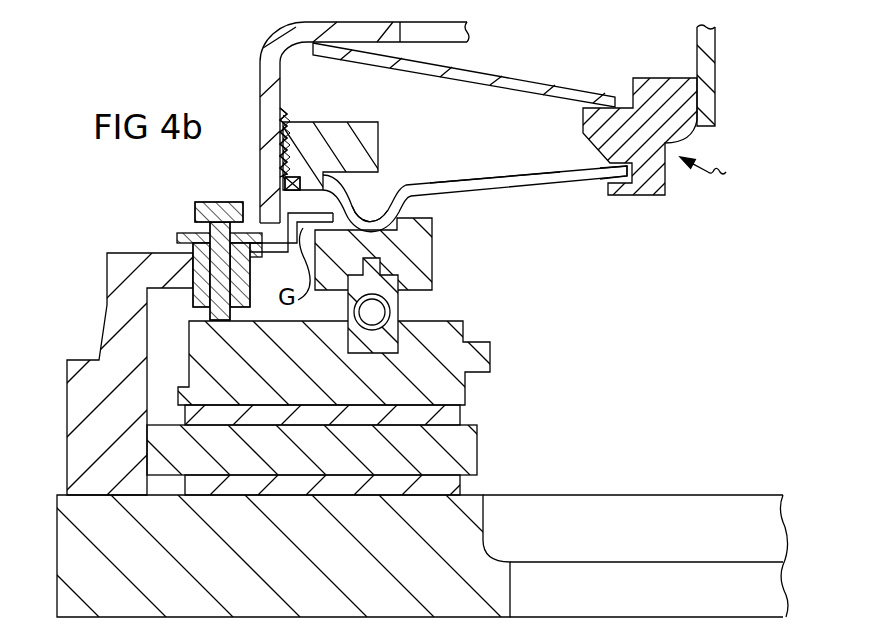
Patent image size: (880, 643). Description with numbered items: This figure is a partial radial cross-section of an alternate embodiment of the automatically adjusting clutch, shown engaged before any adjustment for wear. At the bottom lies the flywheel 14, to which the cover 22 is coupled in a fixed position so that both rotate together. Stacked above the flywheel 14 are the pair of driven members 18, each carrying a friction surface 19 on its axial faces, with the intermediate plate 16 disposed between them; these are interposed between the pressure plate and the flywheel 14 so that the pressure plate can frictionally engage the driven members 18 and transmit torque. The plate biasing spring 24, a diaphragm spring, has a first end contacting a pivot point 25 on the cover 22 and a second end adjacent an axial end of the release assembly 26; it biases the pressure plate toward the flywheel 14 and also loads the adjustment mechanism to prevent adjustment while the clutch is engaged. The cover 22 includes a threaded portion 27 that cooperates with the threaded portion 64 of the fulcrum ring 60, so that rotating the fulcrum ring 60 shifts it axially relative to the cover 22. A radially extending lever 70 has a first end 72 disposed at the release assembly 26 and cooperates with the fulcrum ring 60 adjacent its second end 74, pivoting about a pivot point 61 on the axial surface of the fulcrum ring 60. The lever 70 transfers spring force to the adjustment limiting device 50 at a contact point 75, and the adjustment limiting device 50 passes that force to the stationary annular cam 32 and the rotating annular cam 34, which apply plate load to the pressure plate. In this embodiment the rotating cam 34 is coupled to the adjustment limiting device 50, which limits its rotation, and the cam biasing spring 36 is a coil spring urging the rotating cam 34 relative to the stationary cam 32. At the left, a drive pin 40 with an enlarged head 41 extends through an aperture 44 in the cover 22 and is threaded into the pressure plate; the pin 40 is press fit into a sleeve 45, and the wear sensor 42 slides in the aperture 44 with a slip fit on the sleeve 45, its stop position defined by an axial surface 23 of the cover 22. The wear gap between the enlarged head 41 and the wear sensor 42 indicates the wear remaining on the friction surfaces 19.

The flywheel 14 is at (76, 538).
The intermediate plate 16 is at (160, 457).
The driven members 18 is at (462, 413).
The friction surface 19 is at (222, 403).
The cover 22 is at (280, 63).
The axial surface 23 is at (125, 253).
The plate biasing spring 24 is at (491, 77).
The pivot point 25 is at (301, 22).
The release assembly 26 is at (646, 110).
The threaded portion 27 is at (279, 118).
The stationary annular cam 32 is at (392, 343).
The rotating annular cam 34 is at (385, 290).
The cam biasing spring 36 is at (395, 313).
The drive pin 40 is at (215, 232).
The enlarged head 41 is at (226, 211).
The wear sensor 42 is at (196, 238).
The aperture 44 is at (196, 275).
The sleeve 45 is at (200, 262).
The adjustment limiting device 50 is at (418, 240).
The fulcrum ring 60 is at (380, 133).
The pivot point 61 is at (288, 186).
The threaded portion 64 is at (281, 155).
The lever 70 is at (490, 178).
The first end 72 is at (607, 170).
The second end 74 is at (356, 198).
The contact point 75 is at (372, 224).